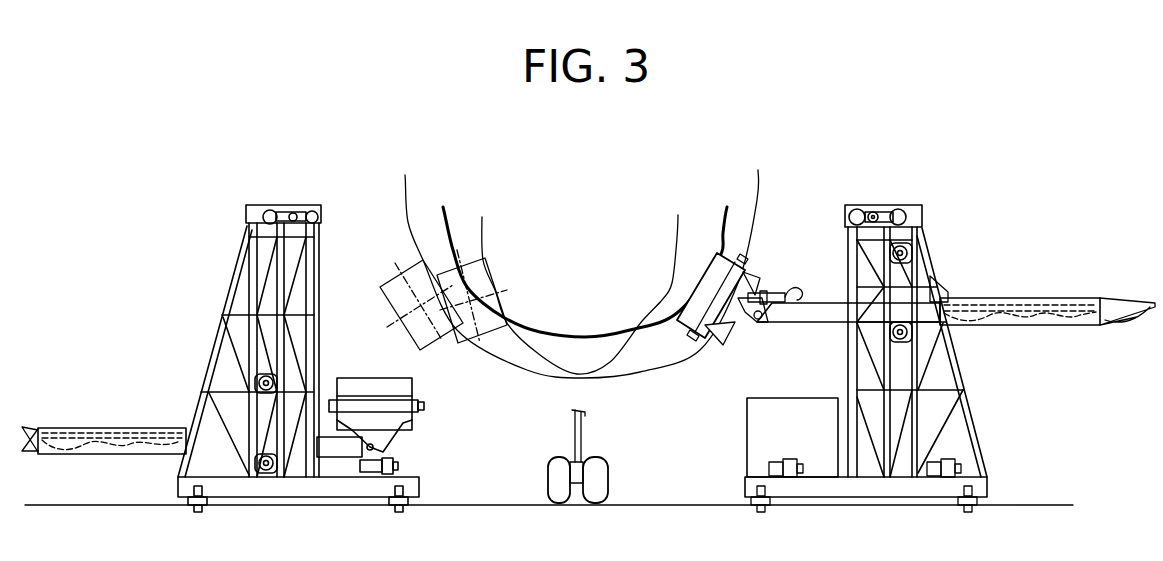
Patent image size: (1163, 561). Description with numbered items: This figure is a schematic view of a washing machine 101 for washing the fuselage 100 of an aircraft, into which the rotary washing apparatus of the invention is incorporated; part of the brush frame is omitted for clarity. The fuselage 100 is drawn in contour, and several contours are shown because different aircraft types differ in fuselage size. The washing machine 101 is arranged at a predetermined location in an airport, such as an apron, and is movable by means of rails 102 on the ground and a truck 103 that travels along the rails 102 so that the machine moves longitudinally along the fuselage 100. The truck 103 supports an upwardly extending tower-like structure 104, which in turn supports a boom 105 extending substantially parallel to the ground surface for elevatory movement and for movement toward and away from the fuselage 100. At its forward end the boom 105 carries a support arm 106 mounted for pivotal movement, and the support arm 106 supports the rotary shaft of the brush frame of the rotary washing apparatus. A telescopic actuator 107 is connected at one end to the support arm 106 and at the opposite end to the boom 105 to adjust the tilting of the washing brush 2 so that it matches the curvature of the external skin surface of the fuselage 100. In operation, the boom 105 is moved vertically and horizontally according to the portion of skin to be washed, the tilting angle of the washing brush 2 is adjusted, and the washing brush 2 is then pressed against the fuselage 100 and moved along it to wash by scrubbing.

The washing brush 2 is at (707, 340).
The fuselage 100 is at (762, 208).
The washing machine 101 is at (940, 245).
The rails 102 is at (753, 512).
The truck 103 is at (818, 488).
The tower-like structure 104 is at (940, 297).
The boom 105 is at (1080, 297).
The support arm 106 is at (740, 312).
The telescopic actuator 107 is at (782, 290).